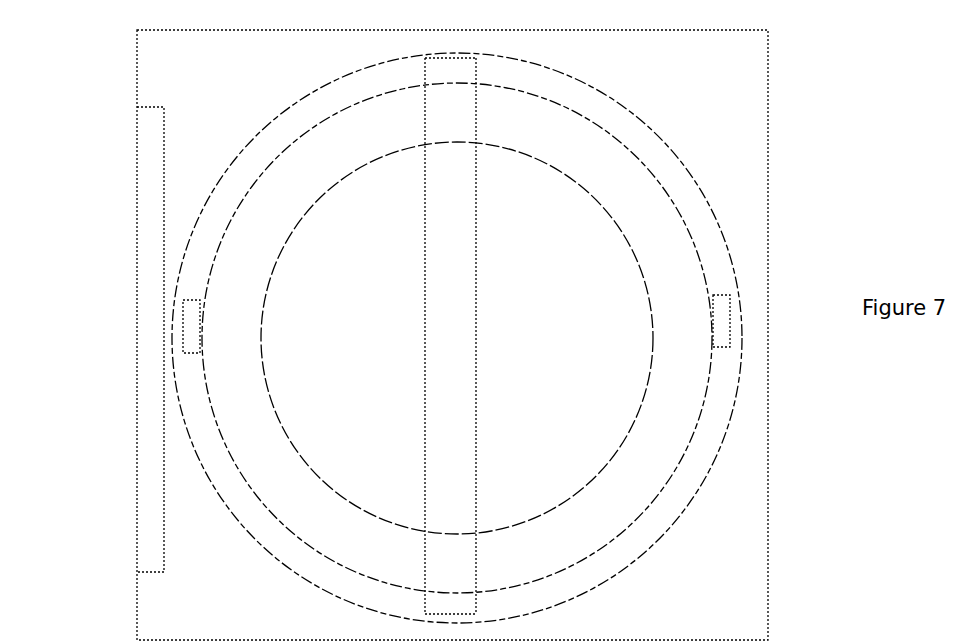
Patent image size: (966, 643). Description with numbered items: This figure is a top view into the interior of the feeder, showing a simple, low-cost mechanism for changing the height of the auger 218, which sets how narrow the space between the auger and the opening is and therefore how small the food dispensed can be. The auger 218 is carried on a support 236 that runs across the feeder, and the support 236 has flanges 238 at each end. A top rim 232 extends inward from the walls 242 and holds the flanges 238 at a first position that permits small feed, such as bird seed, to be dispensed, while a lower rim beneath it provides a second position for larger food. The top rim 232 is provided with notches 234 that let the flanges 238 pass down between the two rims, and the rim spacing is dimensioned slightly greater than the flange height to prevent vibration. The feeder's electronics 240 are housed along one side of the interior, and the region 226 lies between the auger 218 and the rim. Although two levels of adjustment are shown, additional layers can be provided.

The auger 218 is at (457, 338).
The middle annular region 226 is at (457, 338).
The top rim 232 is at (272, 137).
The notches 234 is at (190, 332).
The support 236 is at (454, 336).
The flanges 238 is at (455, 68).
The electronics 240 is at (148, 270).
The walls 242 is at (452, 335).